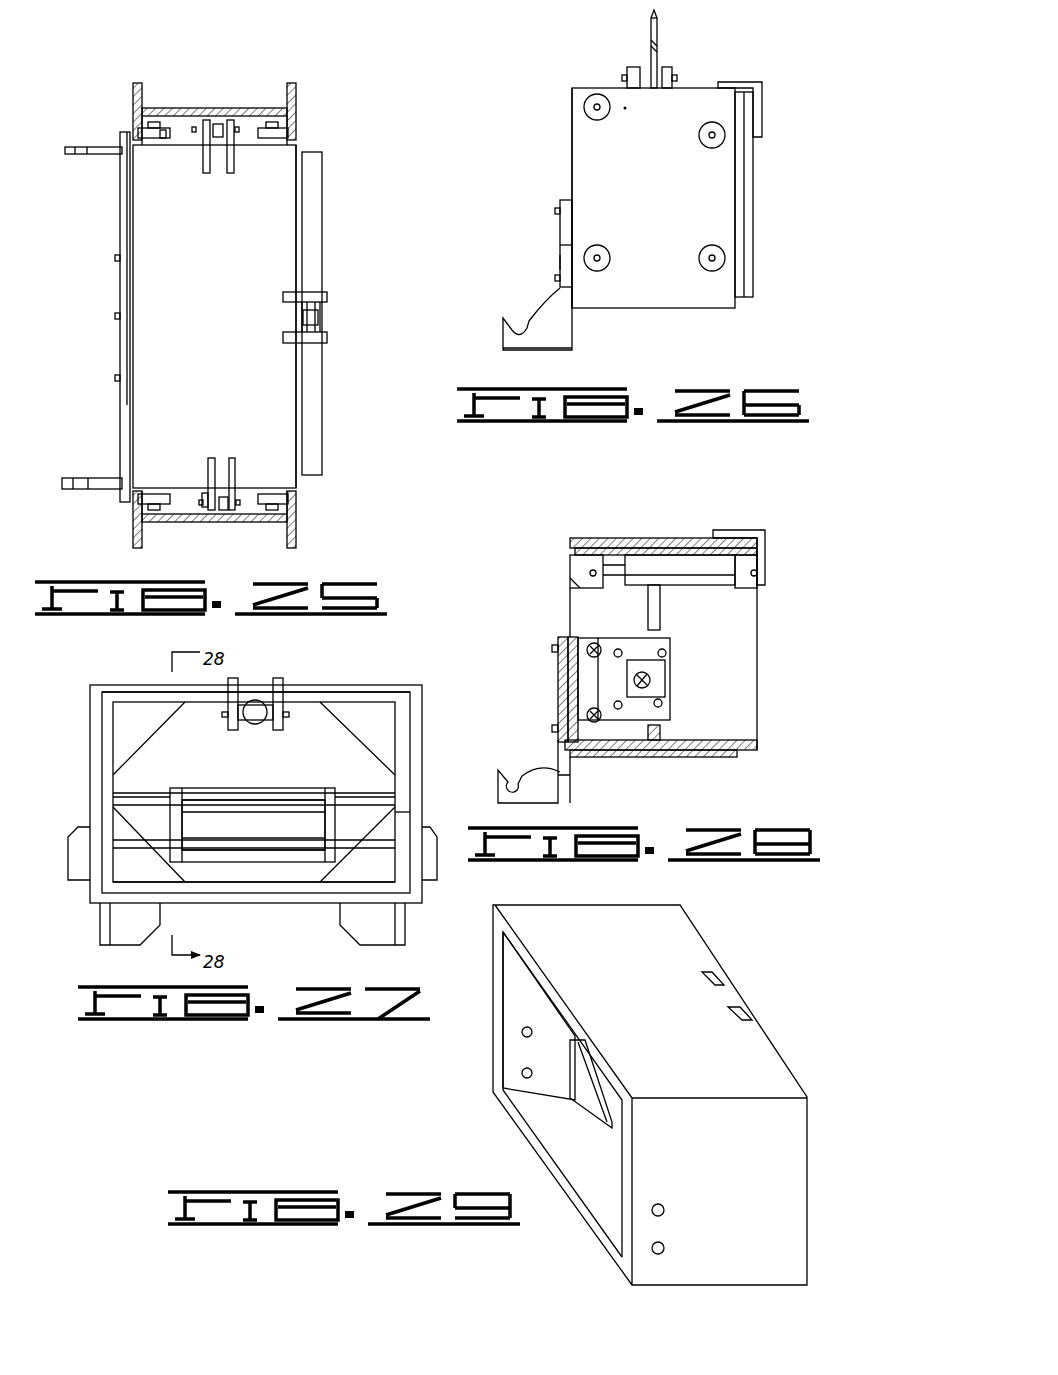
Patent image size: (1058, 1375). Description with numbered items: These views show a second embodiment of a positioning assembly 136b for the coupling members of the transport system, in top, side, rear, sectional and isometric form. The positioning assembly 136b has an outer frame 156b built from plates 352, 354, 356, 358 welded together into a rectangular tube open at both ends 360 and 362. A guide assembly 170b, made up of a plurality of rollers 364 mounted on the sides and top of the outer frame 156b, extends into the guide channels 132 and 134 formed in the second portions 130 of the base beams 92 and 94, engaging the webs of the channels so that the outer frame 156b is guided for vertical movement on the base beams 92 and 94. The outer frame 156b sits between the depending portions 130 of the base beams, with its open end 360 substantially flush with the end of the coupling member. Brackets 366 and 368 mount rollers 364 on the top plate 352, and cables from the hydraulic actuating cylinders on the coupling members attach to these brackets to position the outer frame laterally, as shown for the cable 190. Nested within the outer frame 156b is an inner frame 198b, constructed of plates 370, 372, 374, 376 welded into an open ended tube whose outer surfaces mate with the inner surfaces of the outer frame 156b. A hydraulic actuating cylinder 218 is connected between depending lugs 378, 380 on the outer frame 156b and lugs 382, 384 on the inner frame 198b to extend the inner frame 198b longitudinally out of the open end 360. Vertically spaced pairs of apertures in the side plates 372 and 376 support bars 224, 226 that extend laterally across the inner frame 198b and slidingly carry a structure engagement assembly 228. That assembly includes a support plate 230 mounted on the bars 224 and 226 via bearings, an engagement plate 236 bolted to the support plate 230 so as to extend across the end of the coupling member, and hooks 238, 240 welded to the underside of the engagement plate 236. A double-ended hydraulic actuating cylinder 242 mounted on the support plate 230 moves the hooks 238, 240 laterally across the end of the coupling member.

In FIG. 25, the base beam 92 is at (300, 518).
In FIG. 25, the base beam 94 is at (250, 106).
In FIG. 25, the second portion of base beam 130 is at (296, 88).
In FIG. 25, the guide channel 132 is at (190, 503).
In FIG. 25, the guide channel 134 is at (182, 122).
In FIG. 25, the positioning assembly 136b is at (140, 165).
In FIG. 26, the positioning assembly 136b is at (768, 72).
In FIG. 27, the positioning assembly 136b is at (383, 660).
In FIG. 28, the positioning assembly 136b is at (765, 518).
In FIG. 25, the outer frame 156b is at (275, 165).
In FIG. 26, the outer frame 156b is at (683, 103).
In FIG. 27, the outer frame 156b is at (400, 682).
In FIG. 28, the outer frame 156b is at (572, 533).
In FIG. 25, the guide assembly 170b is at (230, 106).
In FIG. 26, the cable 190 is at (658, 27).
In FIG. 25, the inner frame 198b is at (320, 228).
In FIG. 27, the inner frame 198b is at (424, 700).
In FIG. 28, the inner frame 198b is at (597, 546).
In FIG. 29, the inner frame 198b is at (712, 940).
In FIG. 28, the hydraulic actuating cylinder 218 is at (700, 572).
In FIG. 27, the bar 224 is at (253, 800).
In FIG. 27, the bar 226 is at (245, 850).
In FIG. 26, the structure engagement assembly 228 is at (558, 262).
In FIG. 27, the structure engagement assembly 228 is at (320, 790).
In FIG. 28, the structure engagement assembly 228 is at (558, 668).
In FIG. 28, the support plate 230 is at (568, 640).
In FIG. 26, the engagement plate 236 is at (565, 232).
In FIG. 27, the engagement plate 236 is at (80, 857).
In FIG. 28, the engagement plate 236 is at (556, 708).
In FIG. 25, the hook 238 is at (102, 478).
In FIG. 26, the hook 238 is at (548, 341).
In FIG. 27, the hook 238 is at (105, 925).
In FIG. 28, the hook 238 is at (534, 771).
In FIG. 25, the hook 240 is at (108, 150).
In FIG. 27, the hook 240 is at (400, 925).
In FIG. 27, the double-ended hydraulic actuating cylinder 242 is at (300, 825).
In FIG. 28, the double-ended hydraulic actuating cylinder 242 is at (662, 680).
In FIG. 25, the top plate of outer frame 352 is at (235, 332).
In FIG. 27, the top plate of outer frame 352 is at (318, 690).
In FIG. 28, the top plate of outer frame 352 is at (645, 538).
In FIG. 26, the plate of outer frame 354 is at (672, 204).
In FIG. 27, the plate of outer frame 354 is at (98, 790).
In FIG. 27, the plate of outer frame 356 is at (325, 898).
In FIG. 28, the plate of outer frame 356 is at (608, 752).
In FIG. 27, the plate of outer frame 358 is at (412, 778).
In FIG. 25, the open end of outer frame 360 is at (128, 210).
In FIG. 26, the open end of outer frame 360 is at (570, 114).
In FIG. 25, the open end of outer frame 362 is at (305, 262).
In FIG. 25, the roller 364 is at (200, 120).
In FIG. 26, the roller 364 is at (630, 68).
In FIG. 25, the bracket 366 is at (235, 165).
In FIG. 25, the bracket 368 is at (235, 465).
In FIG. 27, the plate of inner frame 370 is at (130, 700).
In FIG. 28, the plate of inner frame 370 is at (660, 548).
In FIG. 29, the plate of inner frame 370 is at (665, 999).
In FIG. 27, the side plate of inner frame 372 is at (108, 740).
In FIG. 29, the side plate of inner frame 372 is at (733, 1166).
In FIG. 27, the plate of inner frame 374 is at (175, 885).
In FIG. 28, the plate of inner frame 374 is at (715, 745).
In FIG. 29, the plate of inner frame 374 is at (605, 1197).
In FIG. 27, the side plate of inner frame 376 is at (398, 820).
In FIG. 29, the side plate of inner frame 376 is at (515, 965).
In FIG. 25, the depending lug 378 is at (316, 336).
In FIG. 26, the depending lug 378 is at (763, 88).
In FIG. 27, the depending lug 378 is at (233, 678).
In FIG. 25, the depending lug 380 is at (328, 297).
In FIG. 27, the depending lug 380 is at (278, 678).
In FIG. 28, the depending lug 380 is at (757, 540).
In FIG. 28, the lug 382 is at (583, 562).
In FIG. 29, the lug 382 is at (565, 1025).
In FIG. 29, the lug 384 is at (548, 1003).